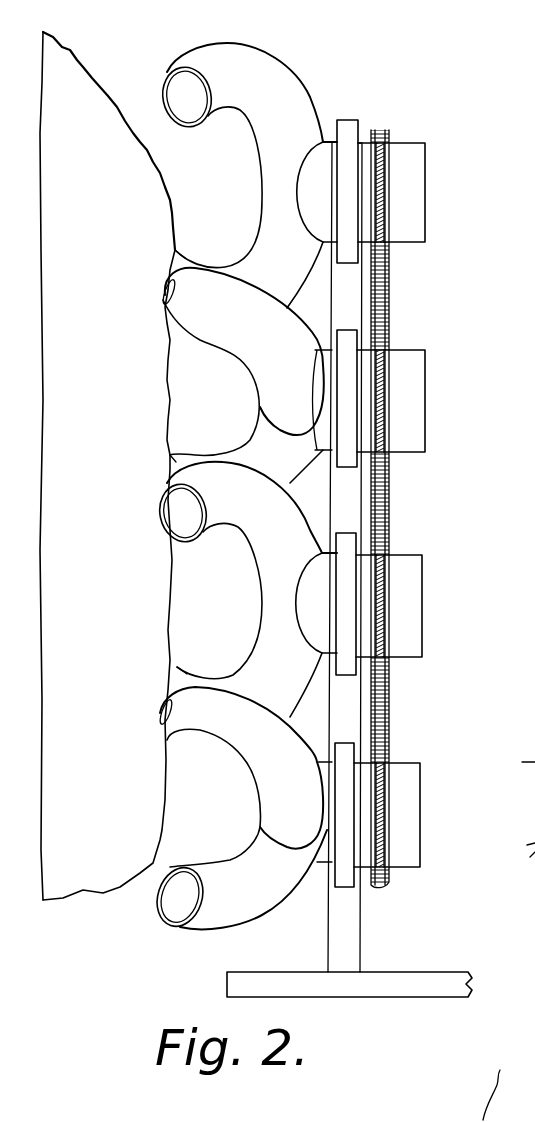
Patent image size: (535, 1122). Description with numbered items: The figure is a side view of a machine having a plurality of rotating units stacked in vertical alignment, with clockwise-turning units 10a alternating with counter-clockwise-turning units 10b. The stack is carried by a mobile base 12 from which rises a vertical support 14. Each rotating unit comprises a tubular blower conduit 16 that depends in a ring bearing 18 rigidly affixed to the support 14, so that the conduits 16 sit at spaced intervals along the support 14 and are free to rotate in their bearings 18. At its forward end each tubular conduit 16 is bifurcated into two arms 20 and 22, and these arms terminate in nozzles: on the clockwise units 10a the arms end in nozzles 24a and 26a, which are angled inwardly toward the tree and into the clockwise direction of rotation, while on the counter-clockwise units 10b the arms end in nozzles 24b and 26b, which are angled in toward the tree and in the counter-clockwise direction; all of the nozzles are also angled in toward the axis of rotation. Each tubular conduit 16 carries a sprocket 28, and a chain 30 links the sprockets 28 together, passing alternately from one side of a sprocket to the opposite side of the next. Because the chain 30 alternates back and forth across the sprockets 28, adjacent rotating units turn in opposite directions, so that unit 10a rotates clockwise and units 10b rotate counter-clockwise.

The rotating unit 10a is at (204, 469).
The rotating unit 10b is at (161, 605).
The mobile base 12 is at (390, 988).
The vertical support 14 is at (347, 302).
The tubular blower conduit 16 is at (424, 136).
The ring bearing 18 is at (348, 123).
The arm 20 is at (273, 62).
The arm 22 is at (257, 238).
The nozzle 24a is at (178, 80).
The nozzle 24b is at (178, 303).
The nozzle 26a is at (175, 250).
The nozzle 26b is at (167, 460).
The sprocket 28 is at (384, 164).
The chain 30 is at (390, 277).